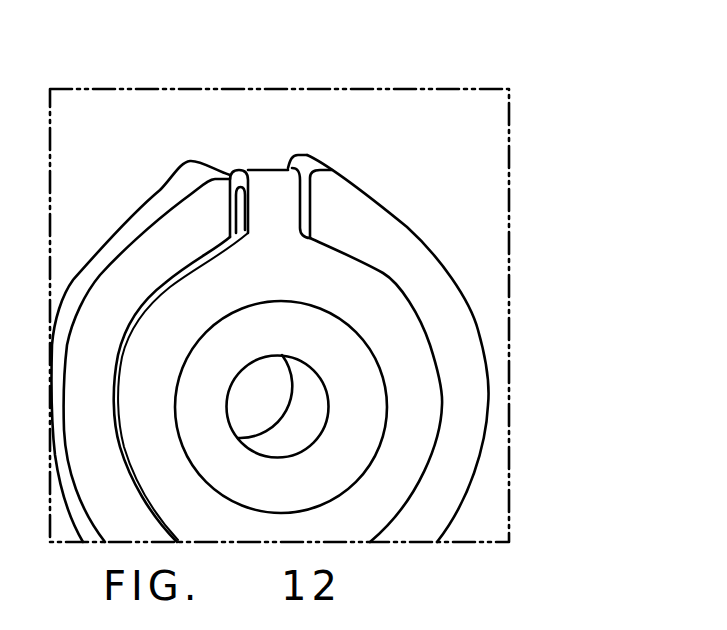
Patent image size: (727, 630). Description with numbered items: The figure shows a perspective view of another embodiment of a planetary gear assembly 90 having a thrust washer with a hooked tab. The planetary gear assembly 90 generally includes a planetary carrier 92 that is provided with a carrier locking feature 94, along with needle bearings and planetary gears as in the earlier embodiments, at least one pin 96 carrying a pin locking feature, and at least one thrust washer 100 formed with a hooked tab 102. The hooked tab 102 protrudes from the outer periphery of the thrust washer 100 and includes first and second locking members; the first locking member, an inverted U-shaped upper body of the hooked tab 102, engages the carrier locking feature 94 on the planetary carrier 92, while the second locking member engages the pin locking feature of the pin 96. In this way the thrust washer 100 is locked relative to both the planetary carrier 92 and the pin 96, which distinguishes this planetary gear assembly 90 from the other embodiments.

The planetary gear assembly 90 is at (408, 130).
The planetary carrier 92 is at (152, 154).
The carrier locking feature 94 is at (295, 148).
The pin 96 is at (332, 460).
The thrust washer 100 is at (418, 425).
The hooked tab 102 is at (258, 182).